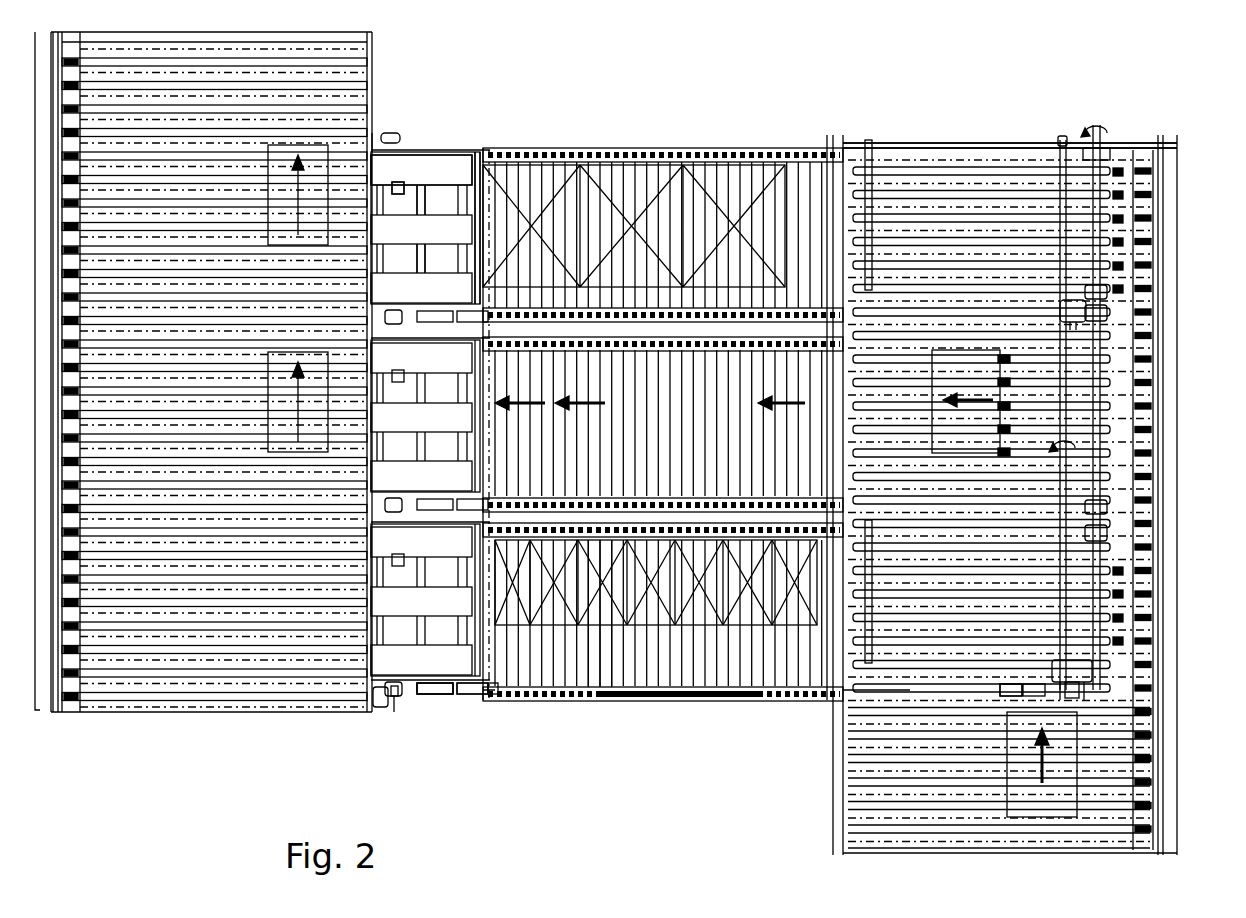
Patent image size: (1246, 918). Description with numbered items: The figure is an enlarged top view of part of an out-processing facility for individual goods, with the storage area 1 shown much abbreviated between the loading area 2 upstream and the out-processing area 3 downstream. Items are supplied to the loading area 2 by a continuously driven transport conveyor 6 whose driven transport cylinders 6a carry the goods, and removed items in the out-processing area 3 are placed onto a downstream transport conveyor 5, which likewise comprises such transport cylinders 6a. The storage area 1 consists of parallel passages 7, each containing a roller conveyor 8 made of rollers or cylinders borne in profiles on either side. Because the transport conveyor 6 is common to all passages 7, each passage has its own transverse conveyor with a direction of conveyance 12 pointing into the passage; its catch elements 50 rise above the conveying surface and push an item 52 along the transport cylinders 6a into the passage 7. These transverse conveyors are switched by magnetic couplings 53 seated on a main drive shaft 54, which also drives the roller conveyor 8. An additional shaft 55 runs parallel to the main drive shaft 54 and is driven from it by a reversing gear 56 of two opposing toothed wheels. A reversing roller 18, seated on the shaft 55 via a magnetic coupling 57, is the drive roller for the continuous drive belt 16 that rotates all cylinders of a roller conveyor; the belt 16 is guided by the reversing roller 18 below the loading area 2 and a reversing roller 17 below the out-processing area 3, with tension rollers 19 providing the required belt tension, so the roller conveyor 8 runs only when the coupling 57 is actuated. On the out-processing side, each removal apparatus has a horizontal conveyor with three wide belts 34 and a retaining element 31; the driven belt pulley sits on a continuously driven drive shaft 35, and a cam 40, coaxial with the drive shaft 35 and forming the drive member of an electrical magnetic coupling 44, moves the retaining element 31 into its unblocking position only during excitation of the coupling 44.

The storage area 1 is at (680, 132).
The loading area 2 is at (1130, 104).
The out-processing area 3 is at (373, 722).
The transport conveyor 5 is at (237, 722).
The transport conveyor 6 is at (951, 138).
The transport cylinders 6a is at (147, 707).
The passages 7 is at (667, 712).
The roller conveyor 8 is at (600, 675).
The direction of conveyance 12 is at (995, 393).
The drive belt 16 is at (493, 695).
The reversing roller 17 is at (443, 695).
The reversing roller 18 is at (1077, 698).
The tension rollers 19 is at (477, 695).
The retaining element 31 is at (473, 200).
The belt 34 is at (440, 160).
The drive shaft 35 is at (394, 696).
The cam 40 is at (403, 183).
The magnetic coupling 44 is at (430, 203).
The catch elements 50 is at (1003, 353).
The item 52 is at (955, 350).
The magnetic couplings 53 is at (1110, 150).
The main drive shaft 54 is at (1094, 126).
The additional shaft 55 is at (1061, 136).
The reversing gear 56 is at (1085, 682).
The magnetic coupling 57 is at (1010, 696).